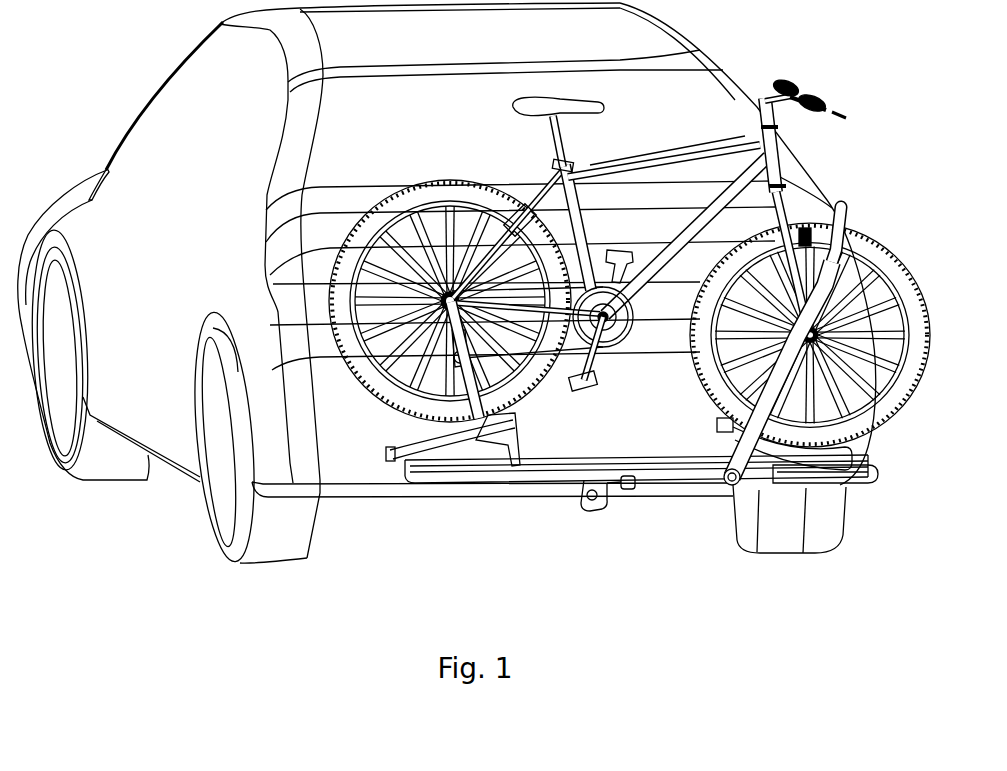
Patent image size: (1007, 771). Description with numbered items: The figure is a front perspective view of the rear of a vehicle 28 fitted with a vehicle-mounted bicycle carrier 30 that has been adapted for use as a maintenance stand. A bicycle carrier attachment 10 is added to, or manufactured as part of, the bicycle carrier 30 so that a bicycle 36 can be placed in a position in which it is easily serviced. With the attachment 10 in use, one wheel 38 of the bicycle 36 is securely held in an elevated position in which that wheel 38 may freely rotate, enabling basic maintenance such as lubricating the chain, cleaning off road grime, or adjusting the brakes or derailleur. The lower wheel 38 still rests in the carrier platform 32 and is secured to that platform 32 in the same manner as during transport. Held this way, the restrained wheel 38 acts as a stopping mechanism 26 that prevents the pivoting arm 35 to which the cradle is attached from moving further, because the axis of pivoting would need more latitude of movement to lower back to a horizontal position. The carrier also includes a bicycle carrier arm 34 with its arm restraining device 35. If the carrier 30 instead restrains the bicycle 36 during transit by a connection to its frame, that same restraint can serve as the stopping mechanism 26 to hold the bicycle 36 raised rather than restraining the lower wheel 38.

The bicycle carrier attachment 10 is at (628, 386).
The stopping mechanism 26 is at (825, 547).
The vehicle 28 is at (447, 283).
The vehicle-mounted bicycle carrier 30 is at (646, 466).
The platform of bicycle carrier 32 is at (443, 472).
The bicycle carrier arm 34 is at (717, 422).
The bicycle carrier arm restraining device 35 is at (843, 208).
The bicycle 36 is at (812, 85).
The bicycle wheel 38 is at (430, 195).